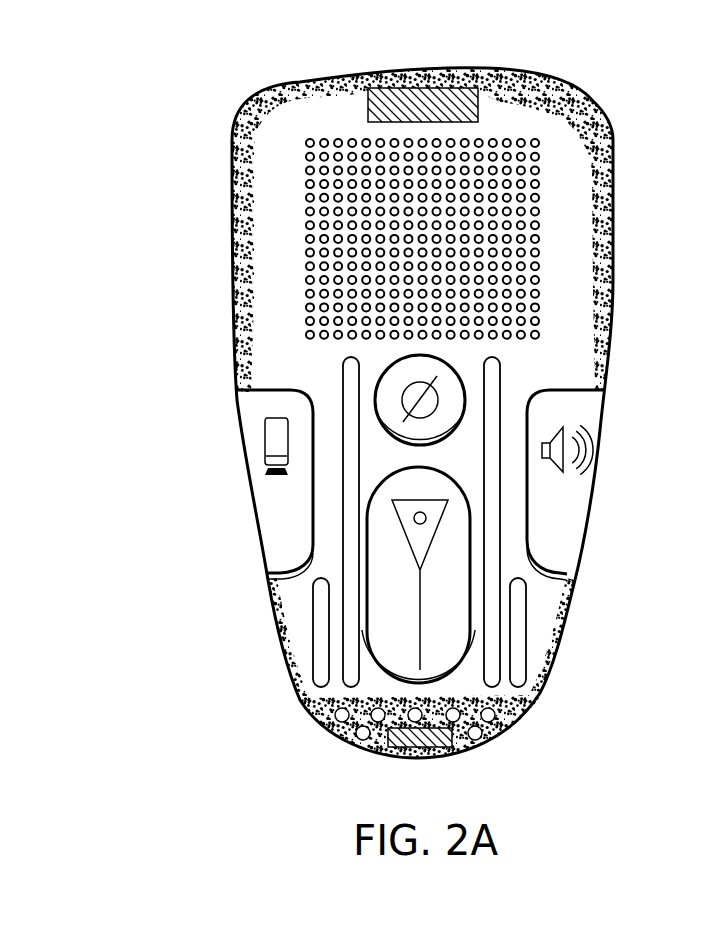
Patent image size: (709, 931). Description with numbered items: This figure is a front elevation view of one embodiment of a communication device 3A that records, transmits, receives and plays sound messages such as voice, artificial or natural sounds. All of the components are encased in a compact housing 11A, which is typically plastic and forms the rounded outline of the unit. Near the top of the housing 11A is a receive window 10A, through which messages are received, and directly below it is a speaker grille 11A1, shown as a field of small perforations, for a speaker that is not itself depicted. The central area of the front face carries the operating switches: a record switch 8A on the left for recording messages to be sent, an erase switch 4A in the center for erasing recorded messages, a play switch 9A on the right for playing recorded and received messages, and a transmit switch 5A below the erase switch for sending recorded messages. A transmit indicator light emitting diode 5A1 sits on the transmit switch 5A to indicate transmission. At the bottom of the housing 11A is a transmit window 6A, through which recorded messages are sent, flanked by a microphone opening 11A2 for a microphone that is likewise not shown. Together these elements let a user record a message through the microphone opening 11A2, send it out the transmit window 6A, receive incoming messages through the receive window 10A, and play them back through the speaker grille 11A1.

The communication device 3A is at (195, 413).
The erase switch 4A is at (447, 395).
The transmit switch 5A is at (455, 632).
The transmit indicator light emitting diode 5A1 is at (425, 522).
The transmit window 6A is at (383, 754).
The record switch 8A is at (273, 508).
The play switch 9A is at (572, 508).
The receive window 10A is at (475, 88).
The housing 11A is at (313, 108).
The speaker grille 11A1 is at (352, 202).
The microphone opening 11A2 is at (500, 730).